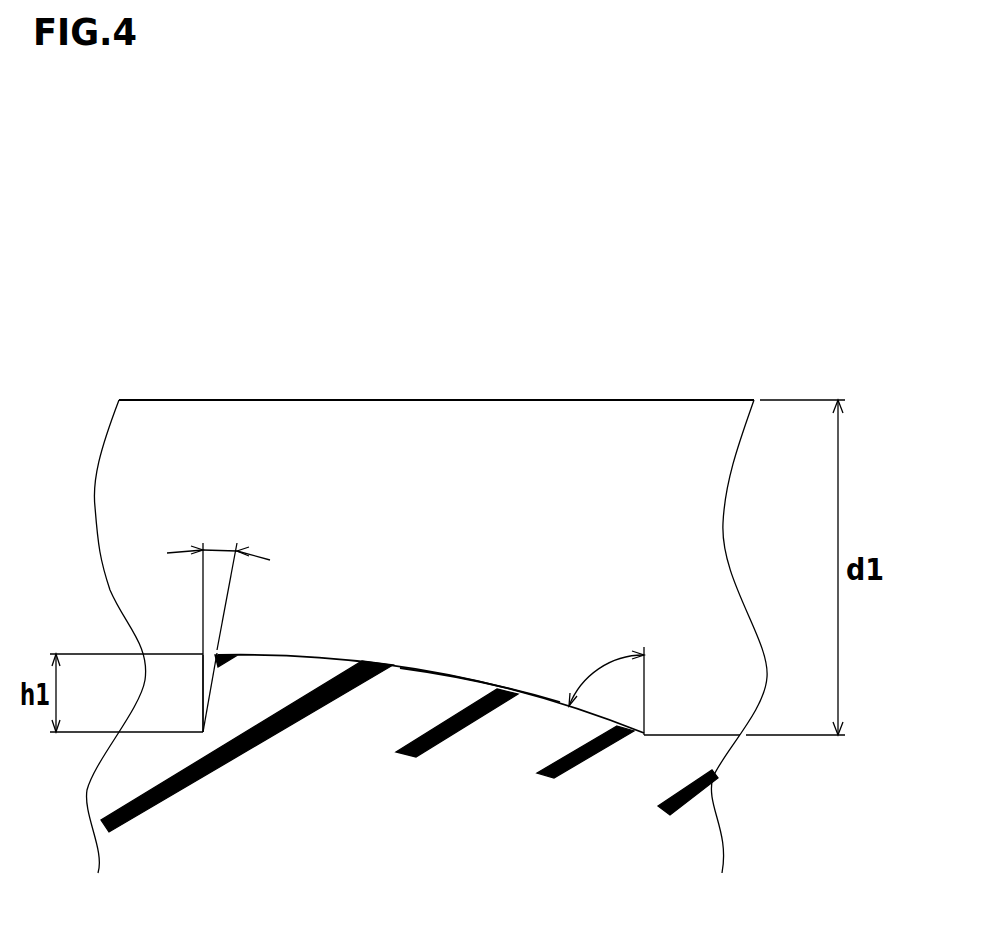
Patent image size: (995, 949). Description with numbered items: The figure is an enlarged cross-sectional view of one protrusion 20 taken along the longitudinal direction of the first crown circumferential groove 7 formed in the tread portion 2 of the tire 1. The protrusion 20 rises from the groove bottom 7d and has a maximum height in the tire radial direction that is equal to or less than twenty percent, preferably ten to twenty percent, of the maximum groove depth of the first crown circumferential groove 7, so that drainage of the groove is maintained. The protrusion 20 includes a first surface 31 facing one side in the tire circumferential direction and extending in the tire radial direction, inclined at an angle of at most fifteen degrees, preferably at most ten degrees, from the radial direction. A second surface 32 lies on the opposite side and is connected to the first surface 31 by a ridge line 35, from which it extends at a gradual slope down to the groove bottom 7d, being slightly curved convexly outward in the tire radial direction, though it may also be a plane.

The tire 1 is at (220, 547).
The tread portion 2 is at (597, 665).
The first crown circumferential groove 7 is at (602, 453).
The groove bottom 7d is at (693, 733).
The protrusion 20 is at (360, 660).
The first surface 31 is at (209, 697).
The second surface 32 is at (453, 675).
The ridge line 35 is at (217, 650).